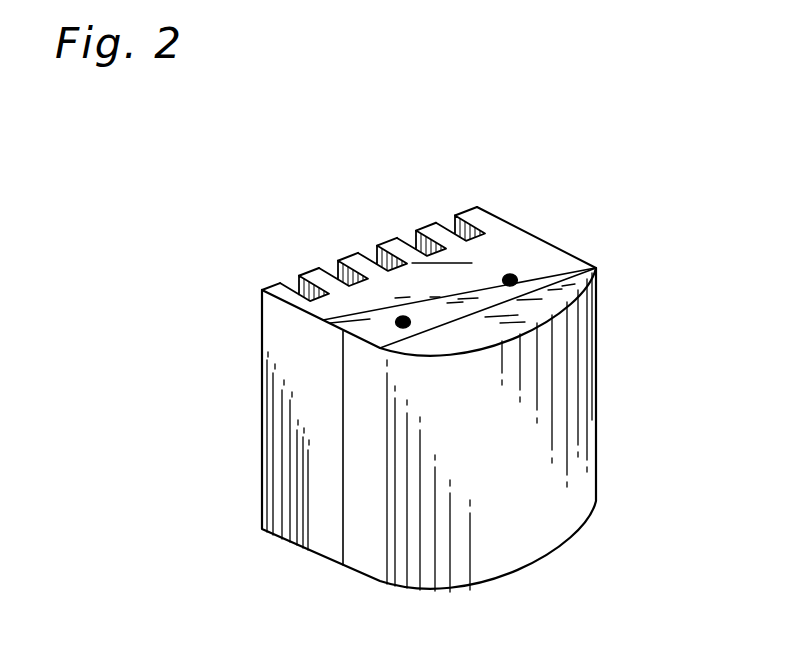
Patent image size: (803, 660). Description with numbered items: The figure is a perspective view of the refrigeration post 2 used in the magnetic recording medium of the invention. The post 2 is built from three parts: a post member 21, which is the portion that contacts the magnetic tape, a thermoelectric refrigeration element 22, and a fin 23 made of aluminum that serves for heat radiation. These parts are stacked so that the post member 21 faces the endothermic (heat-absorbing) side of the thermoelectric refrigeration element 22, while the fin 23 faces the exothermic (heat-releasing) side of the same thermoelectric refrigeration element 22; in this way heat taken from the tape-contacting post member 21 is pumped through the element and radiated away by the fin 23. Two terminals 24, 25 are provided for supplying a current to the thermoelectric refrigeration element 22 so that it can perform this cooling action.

The refrigeration post 2 is at (292, 210).
The post member 21 is at (543, 305).
The thermoelectric refrigeration element 22 is at (565, 258).
The fin 23 is at (324, 320).
The terminal 24 is at (403, 322).
The terminal 25 is at (510, 280).